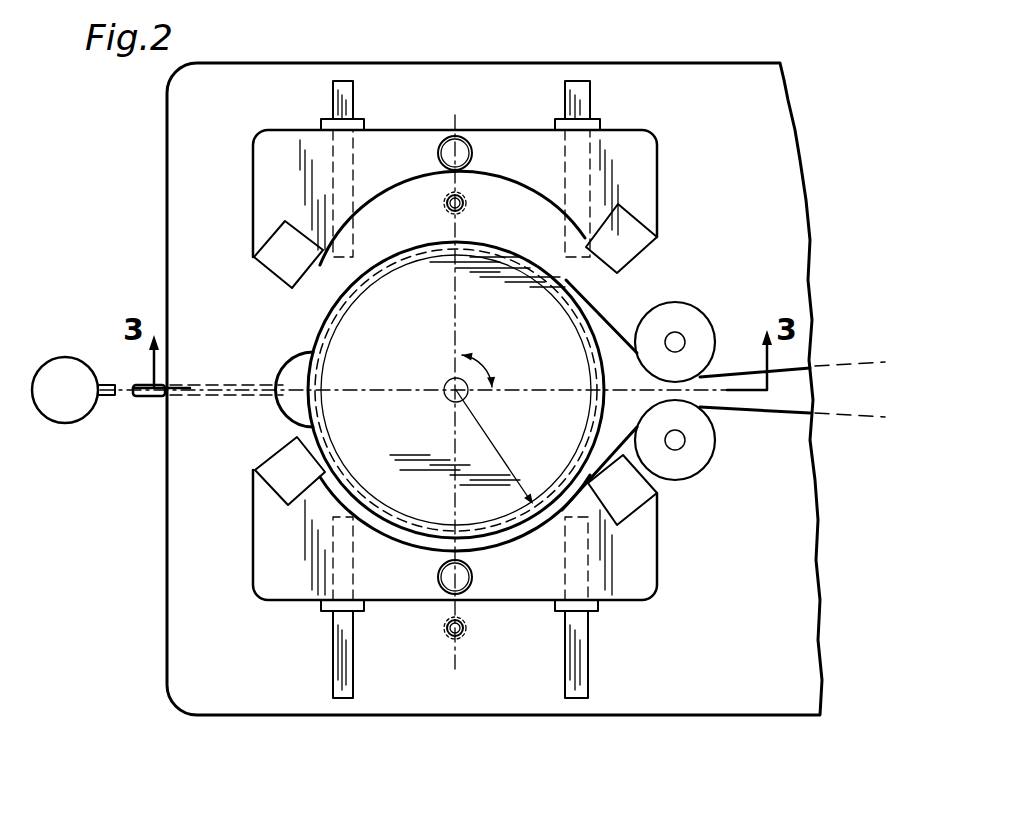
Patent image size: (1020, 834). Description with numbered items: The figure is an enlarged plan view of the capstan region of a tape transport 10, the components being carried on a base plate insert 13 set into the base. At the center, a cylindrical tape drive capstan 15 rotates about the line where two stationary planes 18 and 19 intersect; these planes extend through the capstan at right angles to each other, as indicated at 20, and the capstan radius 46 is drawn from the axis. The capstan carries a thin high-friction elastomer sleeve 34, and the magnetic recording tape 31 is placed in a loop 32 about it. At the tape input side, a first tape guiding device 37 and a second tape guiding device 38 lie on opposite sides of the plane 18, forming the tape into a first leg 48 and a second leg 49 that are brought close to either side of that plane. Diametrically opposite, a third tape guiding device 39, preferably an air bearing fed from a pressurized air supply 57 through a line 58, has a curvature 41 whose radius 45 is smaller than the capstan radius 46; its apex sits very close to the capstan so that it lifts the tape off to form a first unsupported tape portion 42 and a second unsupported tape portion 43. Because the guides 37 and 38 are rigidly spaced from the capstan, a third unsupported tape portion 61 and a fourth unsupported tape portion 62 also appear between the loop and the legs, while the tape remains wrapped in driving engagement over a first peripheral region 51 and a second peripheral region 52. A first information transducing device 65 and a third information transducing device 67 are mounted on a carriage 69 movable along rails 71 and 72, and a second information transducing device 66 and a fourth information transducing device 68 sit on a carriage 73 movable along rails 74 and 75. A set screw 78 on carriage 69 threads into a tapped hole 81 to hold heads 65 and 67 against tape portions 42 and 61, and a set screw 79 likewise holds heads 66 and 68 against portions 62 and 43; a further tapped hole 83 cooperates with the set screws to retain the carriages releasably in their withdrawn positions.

The sheet transport apparatus 10 is at (452, 389).
The base plate insert 13 is at (178, 662).
The tape drive capstan 15 is at (437, 436).
The plane 18 is at (388, 388).
The plane 19 is at (455, 287).
The right angle between planes 20 is at (484, 362).
The magnetic recording tape 31 is at (790, 356).
The tape loop 32 is at (318, 312).
The elastomer coating or sleeve 34 is at (402, 510).
The first tape guiding device 37 is at (693, 317).
The second tape guiding device 38 is at (703, 455).
The third tape guiding device 39 is at (318, 388).
The curvature 41 is at (290, 408).
The first unsupported tape portion 42 is at (307, 338).
The second unsupported tape portion 43 is at (330, 434).
The radius 45 is at (300, 376).
The radius of the capstan 46 is at (503, 445).
The first leg 48 is at (722, 372).
The second leg 49 is at (768, 414).
The first peripheral region 51 is at (427, 243).
The second peripheral region 52 is at (420, 540).
The pressurized air supply 57 is at (80, 357).
The line 58 is at (146, 397).
The third unsupported tape portion 61 is at (610, 320).
The fourth unsupported tape portion 62 is at (618, 440).
The first information transducing device 65 is at (640, 252).
The second information transducing device 66 is at (645, 502).
The third information transducing device 67 is at (268, 266).
The fourth information transducing device 68 is at (288, 487).
The carriage 69 is at (638, 172).
The rail 71 is at (355, 105).
The rail 72 is at (590, 106).
The carriage 73 is at (632, 583).
The rail 74 is at (355, 672).
The rail 75 is at (590, 672).
The set screw 78 is at (472, 157).
The set screw 79 is at (472, 577).
The tapped hole 81 is at (463, 206).
The further tapped hole 83 is at (462, 636).